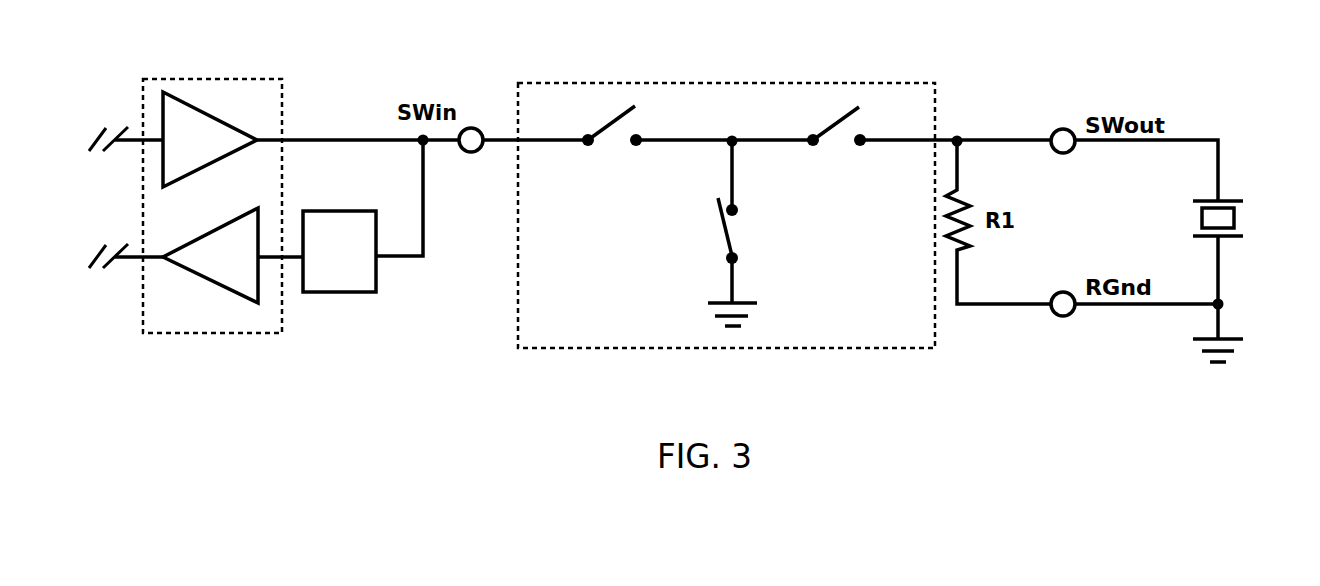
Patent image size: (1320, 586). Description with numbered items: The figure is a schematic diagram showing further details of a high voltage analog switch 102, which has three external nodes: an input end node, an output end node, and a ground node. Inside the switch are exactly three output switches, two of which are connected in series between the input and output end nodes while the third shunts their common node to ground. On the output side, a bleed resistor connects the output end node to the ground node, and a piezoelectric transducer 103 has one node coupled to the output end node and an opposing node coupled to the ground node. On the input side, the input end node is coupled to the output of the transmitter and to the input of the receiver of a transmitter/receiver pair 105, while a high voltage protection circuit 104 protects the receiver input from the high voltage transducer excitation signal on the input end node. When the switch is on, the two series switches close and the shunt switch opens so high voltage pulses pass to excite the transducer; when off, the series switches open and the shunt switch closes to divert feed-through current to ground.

The high voltage analog switch 102 is at (578, 83).
The piezoelectric transducer 103 is at (1229, 193).
The high voltage protection circuit 104 is at (330, 292).
The transmitter/receiver pair 105 is at (215, 78).